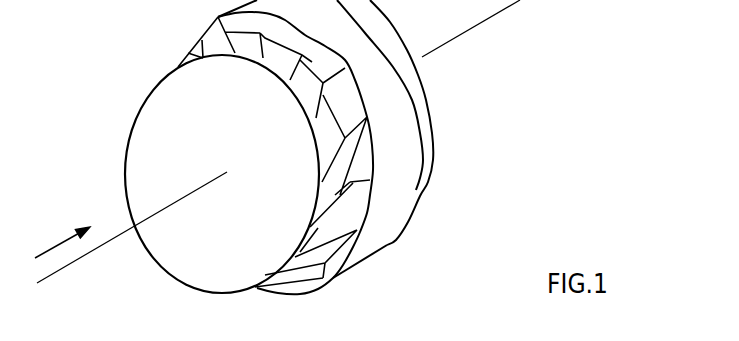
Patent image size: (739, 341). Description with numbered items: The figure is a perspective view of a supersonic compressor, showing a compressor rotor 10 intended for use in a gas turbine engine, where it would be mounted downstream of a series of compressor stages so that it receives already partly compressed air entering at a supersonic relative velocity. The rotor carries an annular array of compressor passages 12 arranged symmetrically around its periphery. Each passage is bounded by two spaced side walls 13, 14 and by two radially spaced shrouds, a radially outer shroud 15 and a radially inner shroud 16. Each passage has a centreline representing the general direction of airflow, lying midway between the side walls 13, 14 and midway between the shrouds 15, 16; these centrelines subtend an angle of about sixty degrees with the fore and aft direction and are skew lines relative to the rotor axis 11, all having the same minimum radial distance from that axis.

The compressor rotor 10 is at (131, 110).
The rotor axis 11 is at (505, 7).
The compressor passages 12 is at (304, 96).
The side wall 13 is at (288, 76).
The side wall 14 is at (255, 62).
The radially outer shroud 15 is at (353, 110).
The radially inner shroud 16 is at (290, 252).